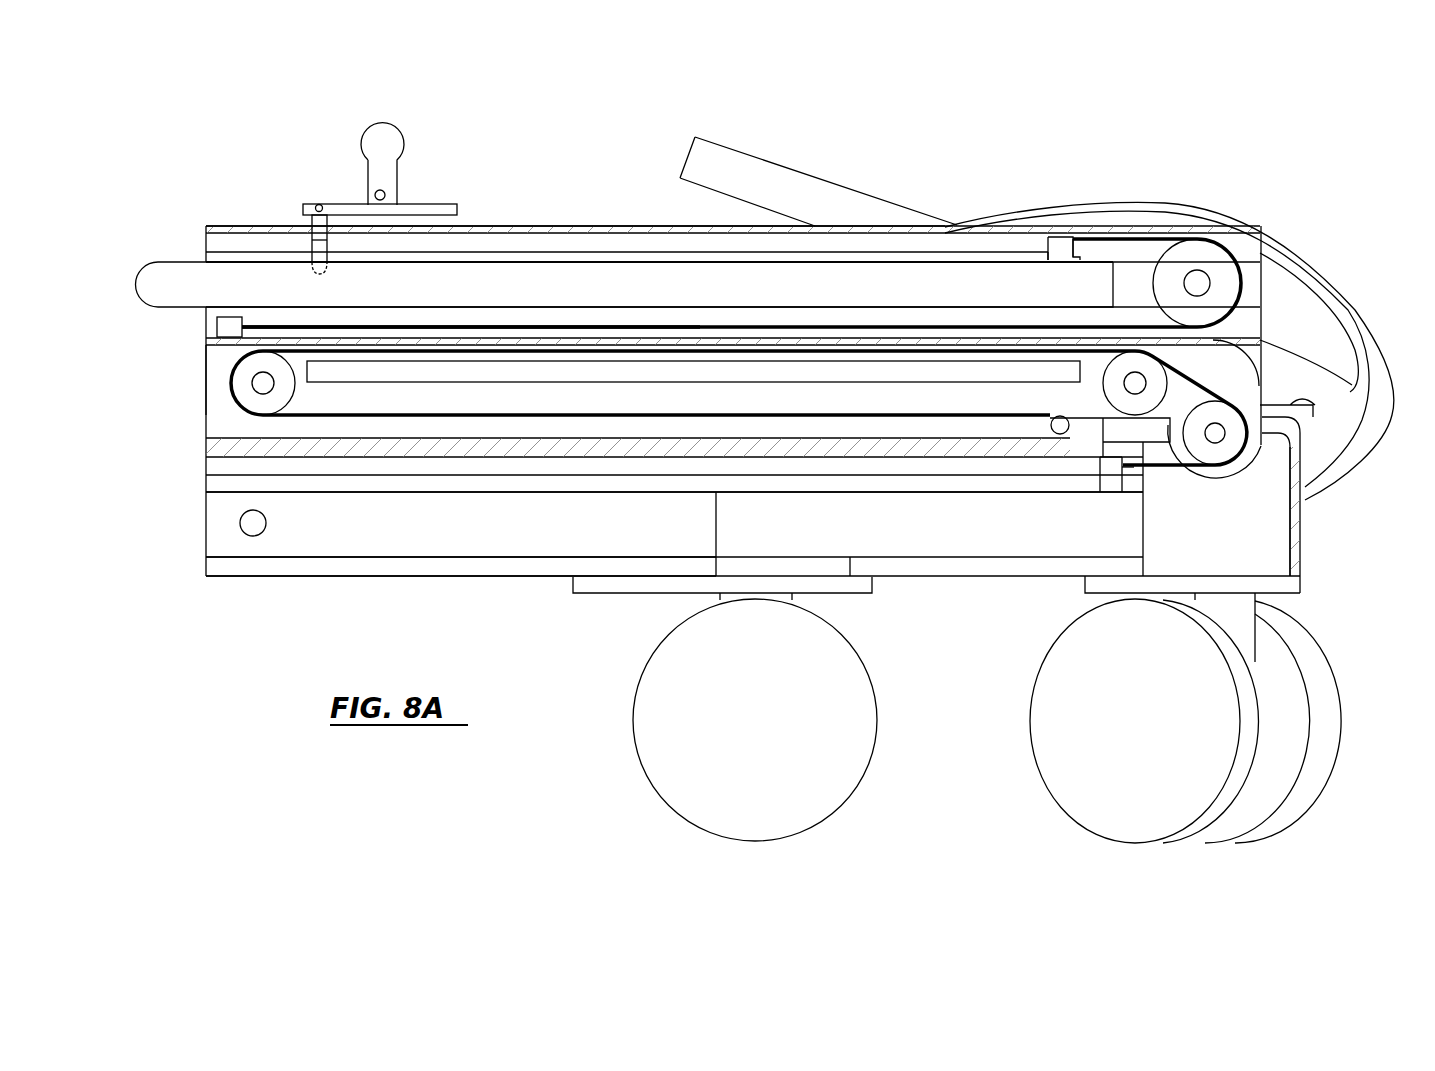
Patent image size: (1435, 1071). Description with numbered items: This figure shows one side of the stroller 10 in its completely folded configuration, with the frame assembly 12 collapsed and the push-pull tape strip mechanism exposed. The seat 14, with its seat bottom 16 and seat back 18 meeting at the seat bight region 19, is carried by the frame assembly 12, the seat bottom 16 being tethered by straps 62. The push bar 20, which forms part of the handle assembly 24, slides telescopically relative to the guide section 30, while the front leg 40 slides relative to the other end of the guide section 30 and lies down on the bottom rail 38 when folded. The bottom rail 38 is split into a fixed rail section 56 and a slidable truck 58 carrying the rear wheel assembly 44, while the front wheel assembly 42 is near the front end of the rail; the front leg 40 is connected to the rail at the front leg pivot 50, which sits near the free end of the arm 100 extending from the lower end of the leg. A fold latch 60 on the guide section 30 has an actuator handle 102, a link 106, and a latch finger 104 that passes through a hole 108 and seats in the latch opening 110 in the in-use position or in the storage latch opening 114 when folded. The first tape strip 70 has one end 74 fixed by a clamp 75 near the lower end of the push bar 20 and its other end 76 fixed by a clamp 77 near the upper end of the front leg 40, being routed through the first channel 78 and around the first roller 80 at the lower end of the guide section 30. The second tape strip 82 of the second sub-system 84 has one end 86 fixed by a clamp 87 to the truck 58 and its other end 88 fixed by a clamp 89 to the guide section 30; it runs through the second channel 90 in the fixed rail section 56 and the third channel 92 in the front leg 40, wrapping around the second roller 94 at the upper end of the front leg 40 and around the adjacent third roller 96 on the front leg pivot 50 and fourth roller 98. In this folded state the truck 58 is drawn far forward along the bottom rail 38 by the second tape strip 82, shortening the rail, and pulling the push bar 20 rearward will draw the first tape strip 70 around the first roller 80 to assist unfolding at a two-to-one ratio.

The stroller 10 is at (1205, 107).
The frame assembly 12 is at (180, 457).
The seat 14 is at (714, 132).
The seat bottom 16 is at (806, 186).
The seat back 18 is at (1323, 418).
The seat bight region 19 is at (1340, 400).
The push bar 20 is at (542, 285).
The handle assembly 24 is at (176, 248).
The guide section 30 is at (638, 228).
The bottom rail 38 is at (412, 592).
The front leg 40 is at (215, 385).
The front wheel assembly 42 is at (1035, 789).
The rear wheel assembly 44 is at (817, 832).
The front leg pivot 50 is at (1215, 433).
The fixed rail section 56 is at (500, 565).
The truck 58 is at (920, 525).
The fold latch 60 is at (398, 124).
The straps 62 is at (1298, 256).
The first tape strip 70 is at (1135, 300).
The end of first tape strip 74 is at (1087, 240).
The clamp 75 is at (1062, 245).
The other end of first tape strip 76 is at (268, 326).
The clamp 77 is at (215, 327).
The first channel 78 is at (430, 426).
The first roller 80 is at (1197, 262).
The second tape strip 82 is at (1178, 393).
The second sub-system 84 is at (1097, 375).
The end of second tape strip 86 is at (1140, 466).
The clamp 87 is at (1107, 467).
The other end of second tape strip 88 is at (1110, 416).
The clamp 89 is at (1052, 432).
The second channel 90 is at (650, 524).
The third channel 92 is at (512, 400).
The second roller 94 is at (253, 388).
The third roller 96 is at (1147, 360).
The fourth roller 98 is at (1235, 466).
The arm 100 is at (1252, 470).
The actuator handle 102 is at (387, 141).
The latch finger 104 is at (322, 250).
The link 106 is at (330, 207).
The hole 108 is at (310, 232).
The latch opening 110 is at (1027, 262).
The storage latch opening 114 is at (307, 265).